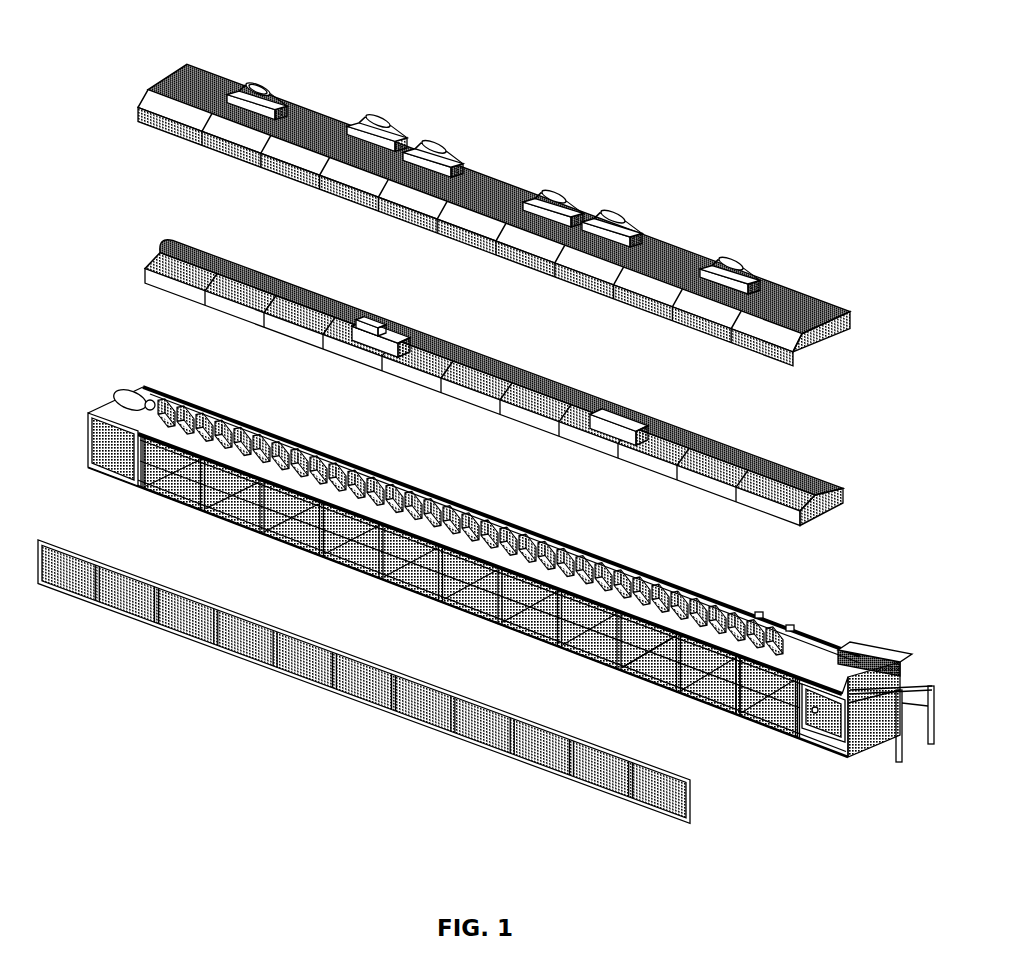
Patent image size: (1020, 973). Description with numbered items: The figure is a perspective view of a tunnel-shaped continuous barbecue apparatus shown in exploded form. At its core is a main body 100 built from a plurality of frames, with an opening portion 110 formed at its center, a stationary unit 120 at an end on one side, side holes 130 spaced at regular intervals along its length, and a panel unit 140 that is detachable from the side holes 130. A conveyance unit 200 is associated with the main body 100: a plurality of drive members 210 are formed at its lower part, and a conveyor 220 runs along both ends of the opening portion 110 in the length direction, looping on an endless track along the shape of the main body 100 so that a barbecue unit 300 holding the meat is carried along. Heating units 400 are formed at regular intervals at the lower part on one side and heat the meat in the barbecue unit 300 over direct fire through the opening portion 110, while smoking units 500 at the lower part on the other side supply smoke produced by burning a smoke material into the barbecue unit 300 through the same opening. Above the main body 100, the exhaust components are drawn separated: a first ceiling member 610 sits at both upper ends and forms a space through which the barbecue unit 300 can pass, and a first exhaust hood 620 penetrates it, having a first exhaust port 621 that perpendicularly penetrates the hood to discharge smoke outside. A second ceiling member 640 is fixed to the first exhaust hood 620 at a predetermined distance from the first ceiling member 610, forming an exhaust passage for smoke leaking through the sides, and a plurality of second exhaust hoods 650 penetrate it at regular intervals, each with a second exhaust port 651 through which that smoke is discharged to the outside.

The main body 100 is at (92, 405).
The opening portion 110 is at (755, 600).
The stationary unit 120 is at (865, 660).
The side holes 130 is at (172, 505).
The panel unit 140 is at (303, 680).
The conveyance unit 200 is at (790, 620).
The drive members 210 is at (745, 700).
The conveyor 220 is at (648, 665).
The barbecue unit 300 is at (140, 395).
The heating unit 400 is at (443, 477).
The smoking unit 500 is at (207, 390).
The first ceiling member 610 is at (815, 482).
The first exhaust hood 620 is at (404, 315).
The first exhaust port 621 is at (365, 300).
The second ceiling member 640 is at (805, 300).
The second exhaust hoods 650 is at (262, 92).
The second exhaust port 651 is at (258, 83).